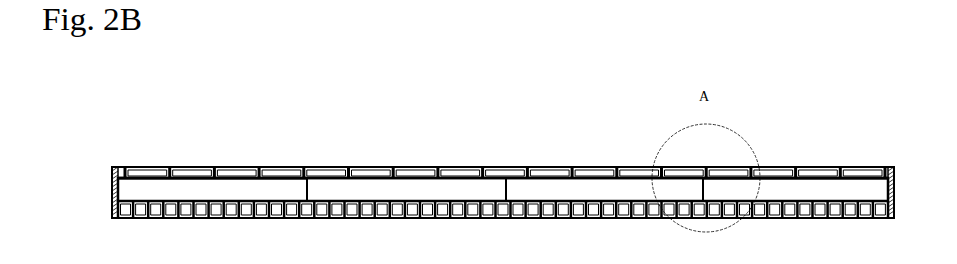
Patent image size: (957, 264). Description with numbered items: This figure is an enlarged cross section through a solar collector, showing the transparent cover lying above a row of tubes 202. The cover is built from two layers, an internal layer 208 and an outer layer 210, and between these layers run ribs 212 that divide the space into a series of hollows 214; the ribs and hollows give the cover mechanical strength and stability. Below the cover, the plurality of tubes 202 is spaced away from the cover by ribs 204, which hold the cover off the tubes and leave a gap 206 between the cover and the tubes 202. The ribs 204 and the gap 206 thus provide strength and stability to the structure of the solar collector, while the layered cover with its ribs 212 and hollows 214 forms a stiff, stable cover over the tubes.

The tubes 202 is at (168, 210).
The ribs 204 is at (302, 190).
The gap 206 is at (228, 190).
The internal layer 208 is at (147, 181).
The outer layer 210 is at (147, 166).
The ribs 212 is at (217, 172).
The hollows 214 is at (273, 172).